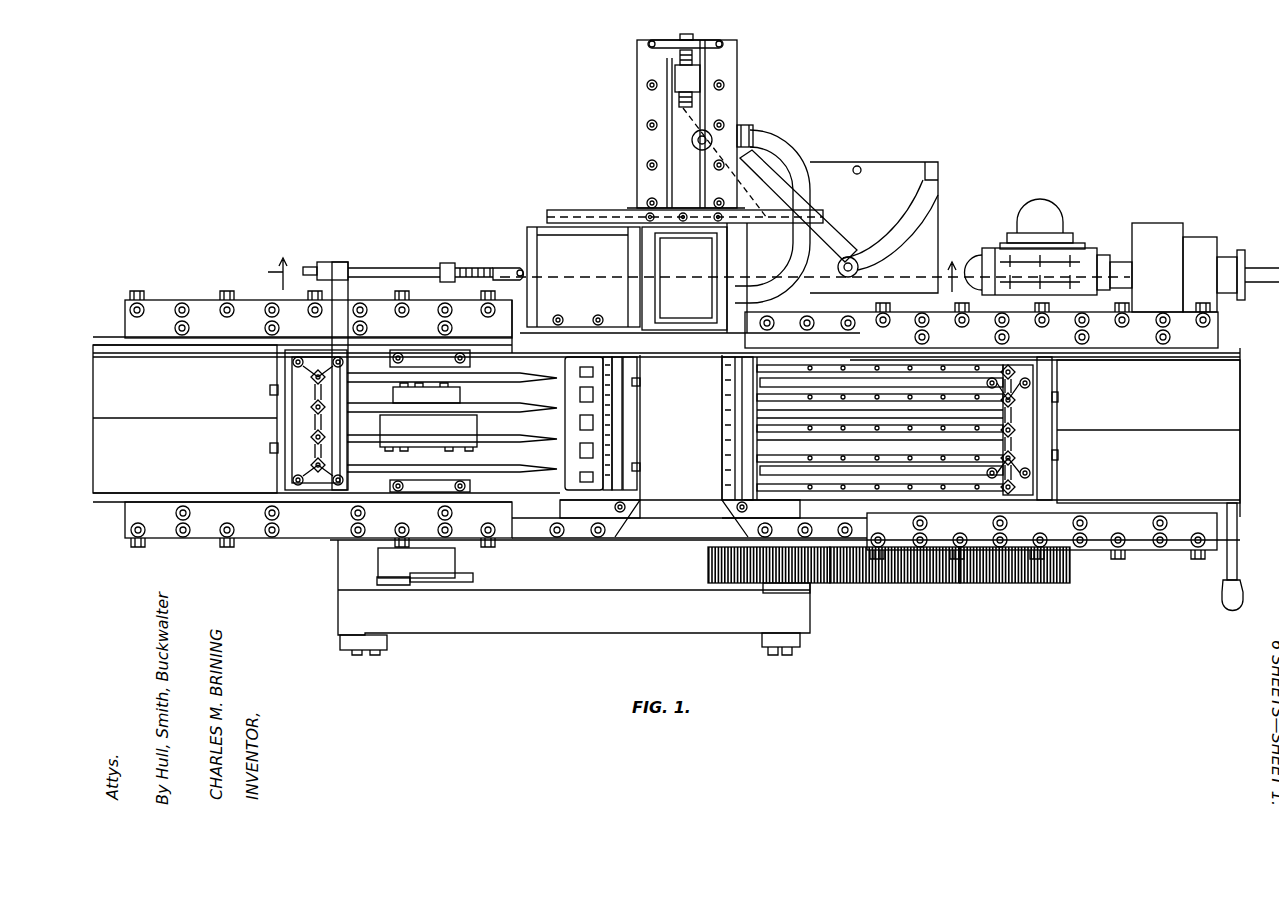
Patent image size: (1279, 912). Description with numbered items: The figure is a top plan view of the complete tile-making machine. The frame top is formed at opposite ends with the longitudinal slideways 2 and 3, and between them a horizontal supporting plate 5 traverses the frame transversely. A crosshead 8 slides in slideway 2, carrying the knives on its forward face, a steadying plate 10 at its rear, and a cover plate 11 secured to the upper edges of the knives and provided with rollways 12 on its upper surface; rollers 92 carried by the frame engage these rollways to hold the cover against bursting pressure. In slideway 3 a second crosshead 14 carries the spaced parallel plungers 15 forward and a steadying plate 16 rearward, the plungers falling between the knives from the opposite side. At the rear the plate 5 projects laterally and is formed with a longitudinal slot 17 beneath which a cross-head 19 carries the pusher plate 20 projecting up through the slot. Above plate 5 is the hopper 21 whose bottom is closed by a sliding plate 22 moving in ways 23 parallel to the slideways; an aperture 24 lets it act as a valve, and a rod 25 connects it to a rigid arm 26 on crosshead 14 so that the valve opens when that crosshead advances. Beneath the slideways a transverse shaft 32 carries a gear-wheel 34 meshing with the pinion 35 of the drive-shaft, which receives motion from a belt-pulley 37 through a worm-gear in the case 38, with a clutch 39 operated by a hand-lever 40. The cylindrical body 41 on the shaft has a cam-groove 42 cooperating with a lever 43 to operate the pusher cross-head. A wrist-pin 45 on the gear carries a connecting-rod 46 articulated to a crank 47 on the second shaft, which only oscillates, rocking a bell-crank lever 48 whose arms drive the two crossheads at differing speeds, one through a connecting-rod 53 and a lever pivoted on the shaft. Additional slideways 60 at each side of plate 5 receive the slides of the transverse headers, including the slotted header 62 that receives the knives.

The longitudinal slideway 2 is at (1215, 345).
The longitudinal slideway 3 is at (125, 345).
The horizontal supporting plate 5 is at (728, 97).
The crosshead 8 is at (1068, 386).
The steadying plate 10 is at (1146, 431).
The cover plate 11 is at (790, 437).
The rollways 12 is at (925, 405).
The second crosshead 14 is at (292, 398).
The plungers 15 is at (532, 383).
The steadying plate 16 is at (185, 419).
The longitudinal slot 17 is at (706, 186).
The cross-head 19 is at (675, 78).
The pusher plate 20 is at (648, 44).
The hopper 21 is at (655, 272).
The sliding plate 22 is at (686, 278).
The ways 23 is at (575, 202).
The aperture 24 is at (545, 265).
The rod 25 is at (380, 268).
The rigid arm 26 is at (338, 262).
The transverse horizontal shaft 32 is at (855, 586).
The gear-wheel 34 is at (955, 586).
The pinion 35 is at (1057, 586).
The belt-pulley 37 is at (1150, 228).
The case 38 is at (1070, 244).
The clutch 39 is at (1195, 243).
The hand-lever 40 is at (1225, 578).
The cylindrical body 41 is at (884, 170).
The cam-groove 42 is at (876, 226).
The lever 43 is at (818, 248).
The wrist-pin 45 is at (800, 650).
The connecting-rod 46 is at (785, 587).
The crank 47 is at (408, 570).
The bell-crank lever 48 is at (428, 421).
The connecting-rod 53 is at (450, 572).
The additional slideways 60 is at (552, 498).
The transverse header 62 is at (565, 445).
The rollers 92 is at (640, 382).